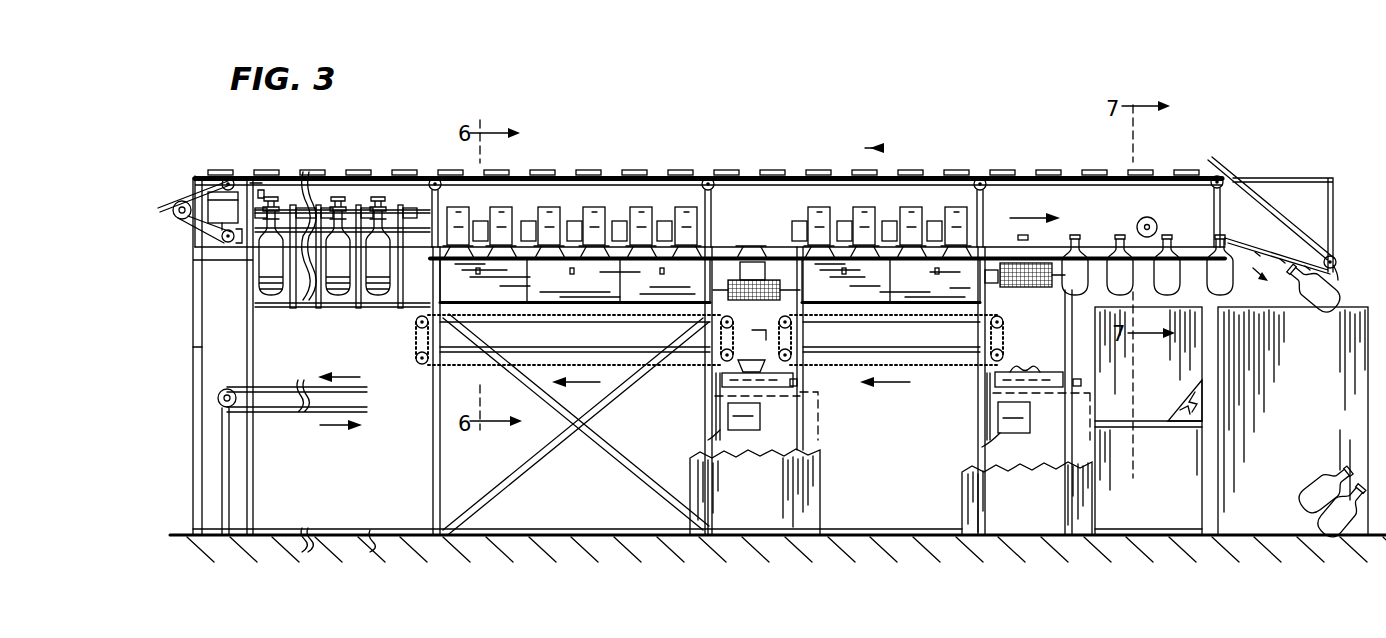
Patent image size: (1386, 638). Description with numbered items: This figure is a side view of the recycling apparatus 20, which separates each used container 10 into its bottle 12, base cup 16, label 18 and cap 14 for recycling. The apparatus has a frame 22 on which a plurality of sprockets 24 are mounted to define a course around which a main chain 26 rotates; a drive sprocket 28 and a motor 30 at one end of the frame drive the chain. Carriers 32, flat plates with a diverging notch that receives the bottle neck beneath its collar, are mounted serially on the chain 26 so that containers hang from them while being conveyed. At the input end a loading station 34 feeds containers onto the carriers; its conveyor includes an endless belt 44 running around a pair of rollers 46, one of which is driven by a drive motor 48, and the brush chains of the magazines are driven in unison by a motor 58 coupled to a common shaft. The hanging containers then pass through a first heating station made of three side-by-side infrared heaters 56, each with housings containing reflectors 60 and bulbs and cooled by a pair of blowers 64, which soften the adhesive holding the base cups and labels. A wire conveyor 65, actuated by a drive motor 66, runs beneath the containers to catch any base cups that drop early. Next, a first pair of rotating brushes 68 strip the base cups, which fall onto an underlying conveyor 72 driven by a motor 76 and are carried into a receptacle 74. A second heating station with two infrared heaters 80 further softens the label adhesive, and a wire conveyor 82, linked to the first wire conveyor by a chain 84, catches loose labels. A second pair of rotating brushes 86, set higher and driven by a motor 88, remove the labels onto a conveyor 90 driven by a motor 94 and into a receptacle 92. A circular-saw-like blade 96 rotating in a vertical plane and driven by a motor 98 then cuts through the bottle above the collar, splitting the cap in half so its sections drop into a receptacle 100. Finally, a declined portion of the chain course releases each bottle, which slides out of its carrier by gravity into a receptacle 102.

The container 10 is at (373, 300).
The bottle 12 is at (1273, 303).
The cap 14 is at (1153, 402).
The base cup 16 is at (756, 316).
The label 18 is at (1030, 366).
The recycling apparatus 20 is at (784, 98).
The frame 22 is at (1287, 166).
The sprockets 24 is at (230, 176).
The chain 26 is at (583, 170).
The drive sprocket 28 is at (184, 220).
The motor 30 is at (170, 215).
The carriers 32 is at (737, 170).
The loading station 34 is at (230, 355).
The endless belt 44 is at (275, 415).
The rollers 46 is at (215, 395).
The drive motor 48 is at (222, 410).
The infrared heaters 56 is at (575, 280).
The motor 58 is at (222, 213).
The reflectors 60 is at (262, 178).
The blowers 64 is at (547, 207).
The wire conveyor 65 is at (540, 366).
The drive motor 66 is at (420, 322).
The rotating brushes 68 is at (772, 280).
The conveyor 72 is at (780, 390).
The receptacle 74 is at (698, 487).
The motor 76 is at (708, 440).
The infrared heaters 80 is at (891, 280).
The wire conveyor 82 is at (935, 368).
The chain 84 is at (762, 334).
The rotating brushes 86 is at (1044, 252).
The motor 88 is at (995, 272).
The conveyor 90 is at (1060, 383).
The receptacle 92 is at (968, 495).
The motor 94 is at (985, 445).
The blade 96 is at (1158, 214).
The motor 98 is at (1135, 219).
The receptacle 100 is at (1148, 421).
The receptacle 102 is at (1227, 490).